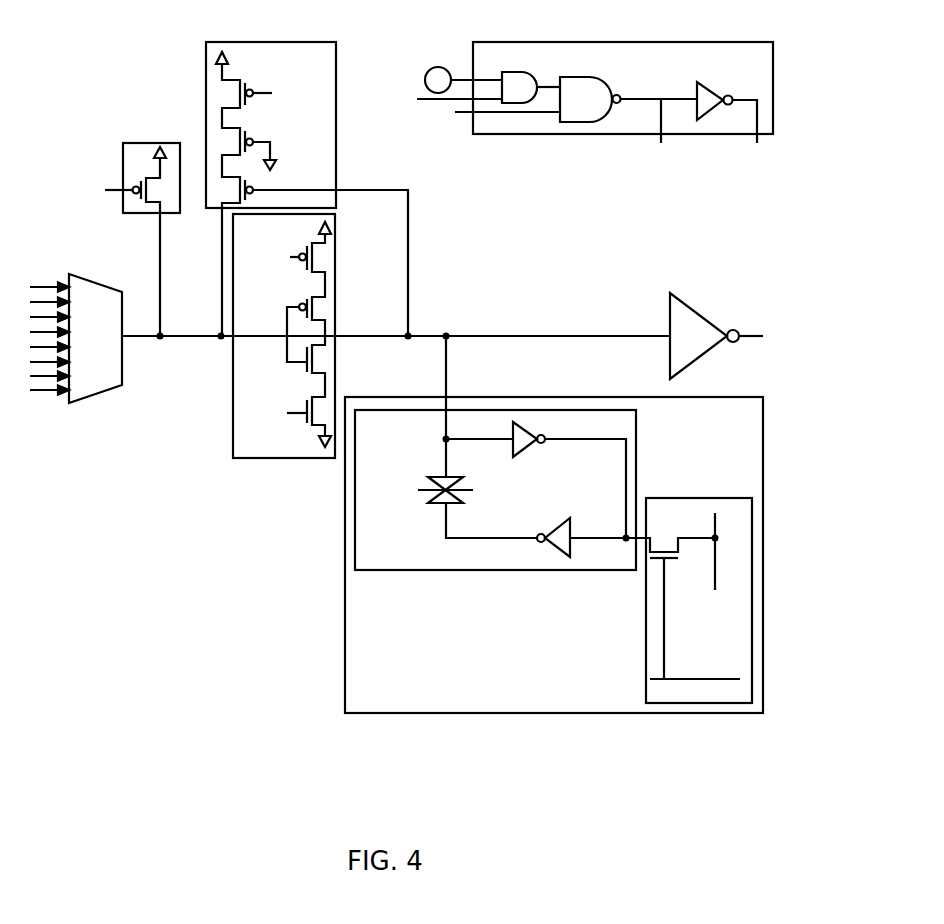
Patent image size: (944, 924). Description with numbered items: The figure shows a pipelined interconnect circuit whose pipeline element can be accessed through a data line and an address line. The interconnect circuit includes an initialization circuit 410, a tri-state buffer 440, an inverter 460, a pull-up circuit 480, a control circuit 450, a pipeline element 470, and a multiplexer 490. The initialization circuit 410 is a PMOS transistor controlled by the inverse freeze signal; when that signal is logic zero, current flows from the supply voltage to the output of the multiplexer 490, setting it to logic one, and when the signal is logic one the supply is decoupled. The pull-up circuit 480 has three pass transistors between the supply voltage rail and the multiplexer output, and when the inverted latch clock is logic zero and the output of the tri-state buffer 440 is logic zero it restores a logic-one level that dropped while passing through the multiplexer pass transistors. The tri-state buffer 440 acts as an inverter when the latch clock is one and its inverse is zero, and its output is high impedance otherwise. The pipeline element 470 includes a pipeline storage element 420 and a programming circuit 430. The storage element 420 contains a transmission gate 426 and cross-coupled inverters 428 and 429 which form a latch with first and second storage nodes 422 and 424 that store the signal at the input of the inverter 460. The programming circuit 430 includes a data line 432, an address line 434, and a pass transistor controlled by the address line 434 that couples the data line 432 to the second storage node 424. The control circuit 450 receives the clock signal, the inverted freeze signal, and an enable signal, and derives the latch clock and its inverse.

The initialization circuit 410 is at (130, 143).
The pipeline storage element 420 is at (526, 453).
The first storage node 422 is at (445, 531).
The second storage node 424 is at (625, 490).
The transmission gate 426 is at (437, 477).
The inverter 428 is at (512, 430).
The inverter 429 is at (556, 540).
The programming circuit 430 is at (689, 577).
The data line 432 is at (712, 522).
The address line 434 is at (732, 679).
The tri-state buffer 440 is at (268, 460).
The control circuit 450 is at (558, 134).
The inverter 460 is at (668, 310).
The pipeline element 470 is at (345, 578).
The pull-up circuit 480 is at (336, 148).
The multiplexer 490 is at (105, 284).